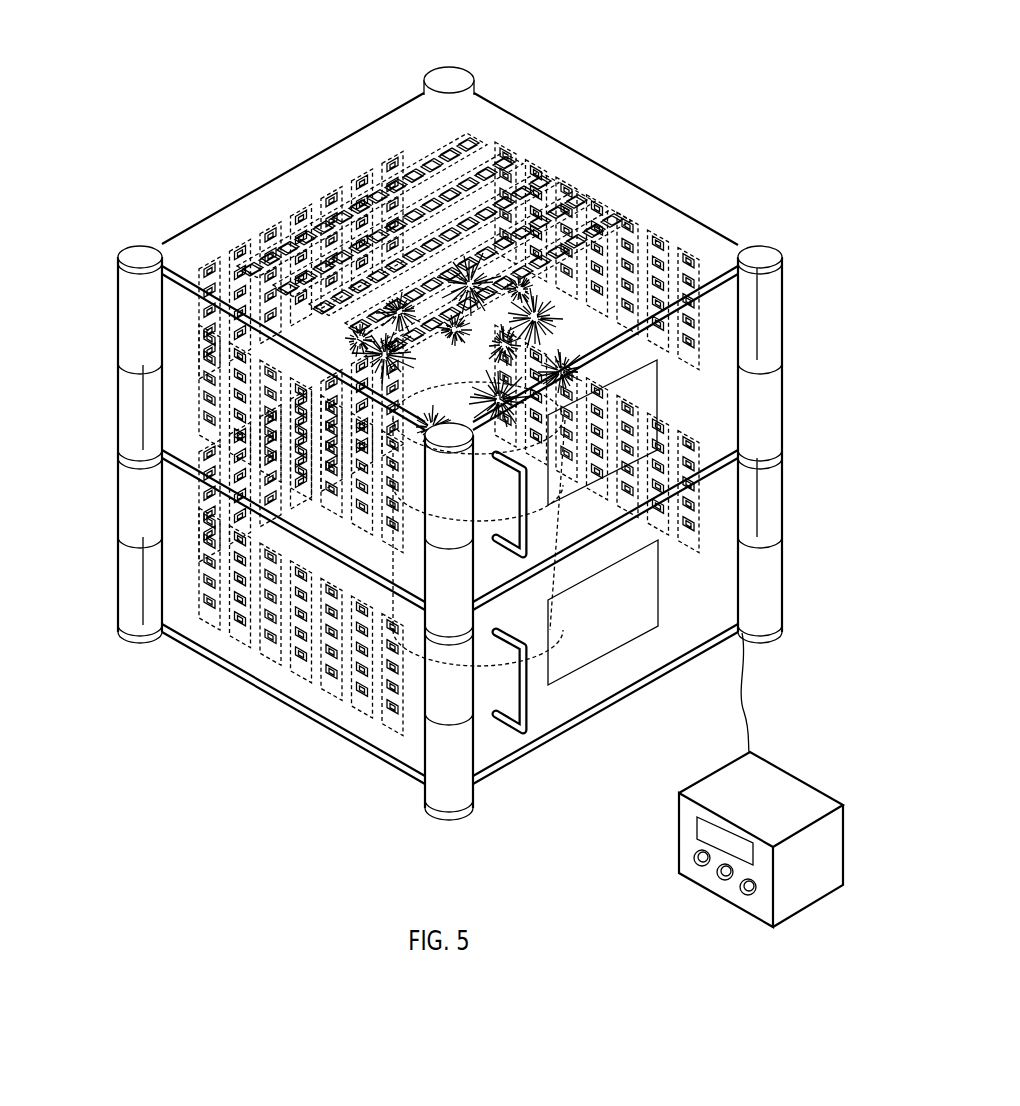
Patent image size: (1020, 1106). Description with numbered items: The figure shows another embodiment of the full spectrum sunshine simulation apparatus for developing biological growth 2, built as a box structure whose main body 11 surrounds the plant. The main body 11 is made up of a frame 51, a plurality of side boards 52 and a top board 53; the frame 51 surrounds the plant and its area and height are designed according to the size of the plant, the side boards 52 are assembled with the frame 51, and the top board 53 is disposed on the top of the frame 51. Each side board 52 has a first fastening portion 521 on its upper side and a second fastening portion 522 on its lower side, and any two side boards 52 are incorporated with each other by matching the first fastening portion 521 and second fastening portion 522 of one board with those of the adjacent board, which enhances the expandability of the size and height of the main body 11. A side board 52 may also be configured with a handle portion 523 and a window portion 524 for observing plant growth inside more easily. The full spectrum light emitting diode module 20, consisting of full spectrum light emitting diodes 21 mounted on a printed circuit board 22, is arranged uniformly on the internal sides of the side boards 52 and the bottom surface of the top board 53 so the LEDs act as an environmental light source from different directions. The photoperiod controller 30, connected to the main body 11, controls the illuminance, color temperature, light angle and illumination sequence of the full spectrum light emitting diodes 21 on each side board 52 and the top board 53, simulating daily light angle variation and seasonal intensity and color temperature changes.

The full spectrum sunshine simulation apparatus for developing biological growth 2 is at (651, 26).
The main body 11 is at (449, 443).
The full spectrum light emitting diode module 20 is at (482, 375).
The full spectrum light emitting diodes 21 is at (467, 130).
The printed circuit board 22 is at (453, 128).
The photoperiod controller 30 is at (780, 760).
The frame 51 is at (150, 584).
The side boards 52 is at (207, 263).
The top board 53 is at (572, 158).
The first fastening portion 521 is at (770, 485).
The second fastening portion 522 is at (433, 783).
The handle portion 523 is at (523, 702).
The window portion 524 is at (615, 628).